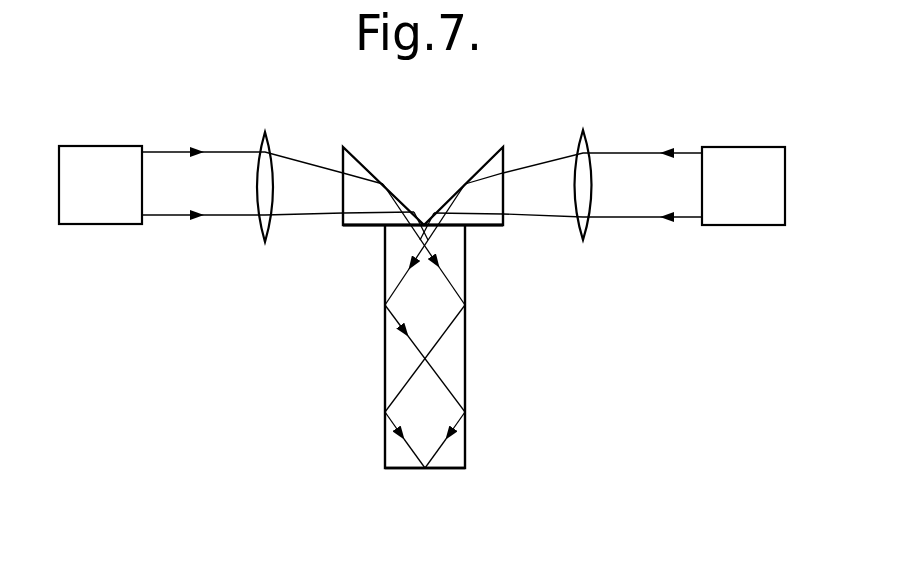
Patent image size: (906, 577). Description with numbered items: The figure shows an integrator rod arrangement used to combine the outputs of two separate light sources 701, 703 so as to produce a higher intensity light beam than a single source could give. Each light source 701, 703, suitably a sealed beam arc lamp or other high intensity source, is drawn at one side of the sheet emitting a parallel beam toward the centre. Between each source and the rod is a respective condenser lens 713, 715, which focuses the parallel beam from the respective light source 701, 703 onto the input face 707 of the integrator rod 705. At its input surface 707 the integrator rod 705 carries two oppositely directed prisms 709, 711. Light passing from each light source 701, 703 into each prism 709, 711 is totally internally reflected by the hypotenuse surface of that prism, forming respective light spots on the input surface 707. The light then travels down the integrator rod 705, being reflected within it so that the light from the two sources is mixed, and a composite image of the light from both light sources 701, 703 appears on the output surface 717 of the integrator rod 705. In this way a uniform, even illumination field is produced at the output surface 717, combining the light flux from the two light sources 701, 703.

The light source 701 is at (107, 210).
The light source 703 is at (752, 213).
The integrator rod 705 is at (443, 337).
The input surface 707 is at (410, 247).
The prism 709 is at (334, 130).
The prism 711 is at (508, 136).
The condenser lens 713 is at (267, 160).
The condenser lens 715 is at (583, 147).
The output surface 717 is at (457, 461).